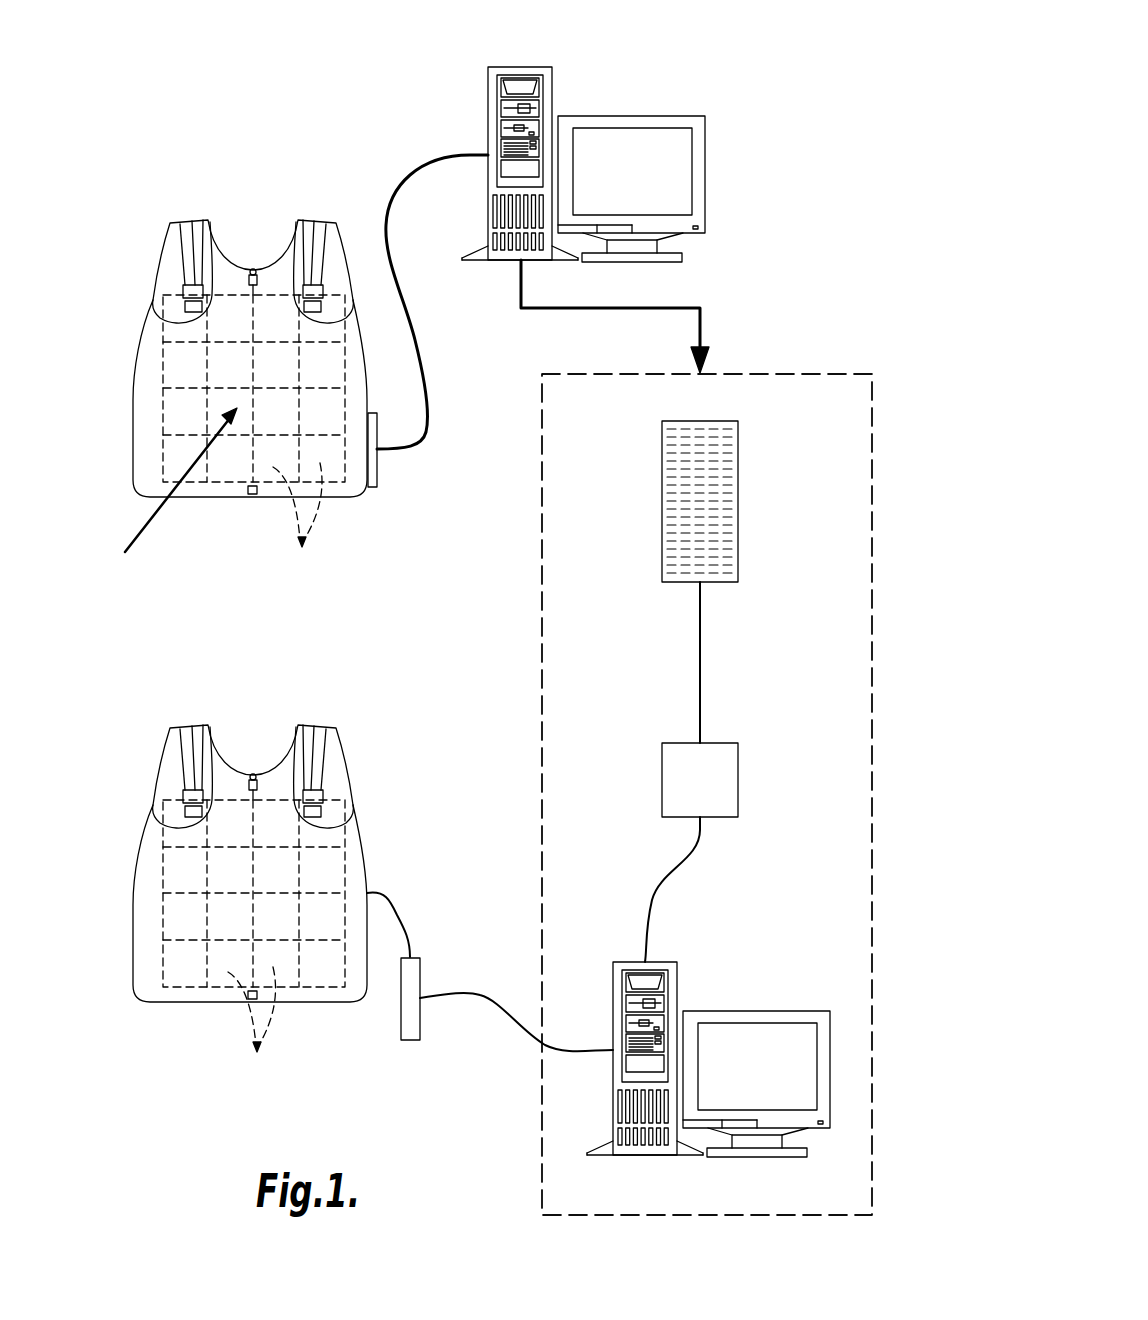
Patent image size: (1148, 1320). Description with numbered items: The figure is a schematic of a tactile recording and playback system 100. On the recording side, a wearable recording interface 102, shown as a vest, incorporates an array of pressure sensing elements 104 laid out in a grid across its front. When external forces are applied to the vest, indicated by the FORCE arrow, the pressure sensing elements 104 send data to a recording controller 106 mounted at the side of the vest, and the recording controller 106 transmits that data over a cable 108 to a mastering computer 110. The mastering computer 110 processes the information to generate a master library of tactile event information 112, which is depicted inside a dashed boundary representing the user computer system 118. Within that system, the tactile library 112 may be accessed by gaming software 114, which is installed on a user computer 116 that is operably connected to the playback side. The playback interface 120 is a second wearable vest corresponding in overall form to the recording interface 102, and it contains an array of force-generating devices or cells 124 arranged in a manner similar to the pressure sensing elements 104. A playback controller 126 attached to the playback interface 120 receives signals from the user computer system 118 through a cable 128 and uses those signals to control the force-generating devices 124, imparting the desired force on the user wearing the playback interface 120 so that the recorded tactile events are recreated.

The tactile recording and playback system 100 is at (803, 86).
The wearable recording interface 102 is at (208, 206).
The pressure sensing elements 104 is at (297, 517).
The recording controller 106 is at (378, 470).
The cable 108 is at (410, 322).
The mastering computer 110 is at (520, 67).
The master library of tactile event information 112 is at (738, 497).
The gaming software 114 is at (738, 780).
The user computer 116 is at (613, 980).
The user computer system 118 is at (812, 374).
The playback interface 120 is at (206, 710).
The force-generating devices 124 is at (252, 1019).
The playback controller 126 is at (401, 1033).
The cable 128 is at (490, 996).